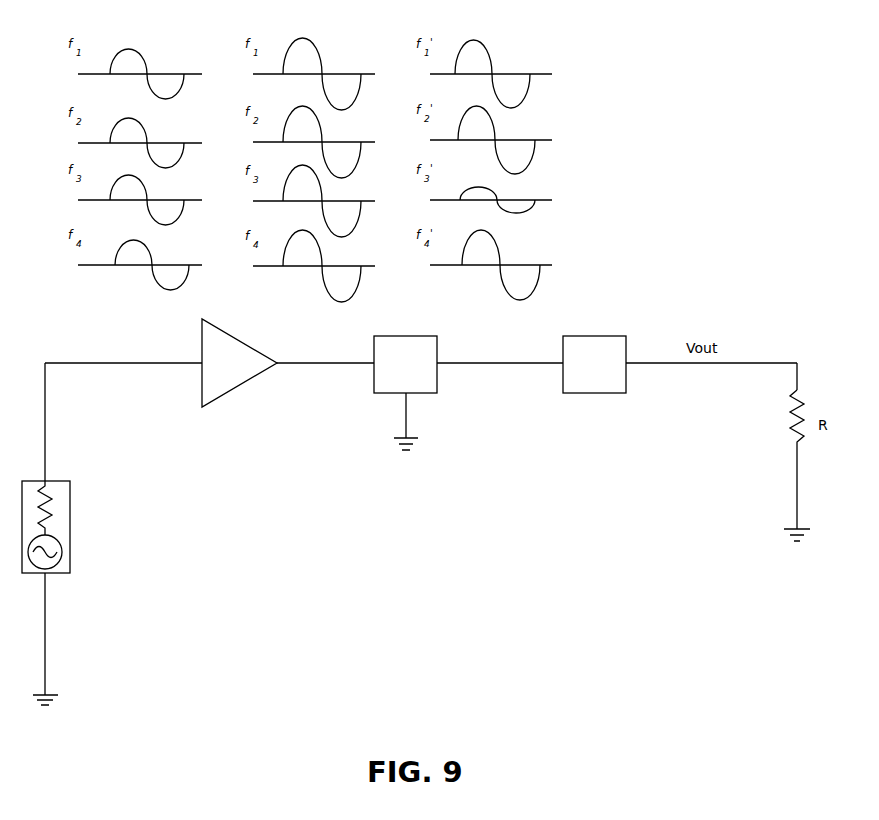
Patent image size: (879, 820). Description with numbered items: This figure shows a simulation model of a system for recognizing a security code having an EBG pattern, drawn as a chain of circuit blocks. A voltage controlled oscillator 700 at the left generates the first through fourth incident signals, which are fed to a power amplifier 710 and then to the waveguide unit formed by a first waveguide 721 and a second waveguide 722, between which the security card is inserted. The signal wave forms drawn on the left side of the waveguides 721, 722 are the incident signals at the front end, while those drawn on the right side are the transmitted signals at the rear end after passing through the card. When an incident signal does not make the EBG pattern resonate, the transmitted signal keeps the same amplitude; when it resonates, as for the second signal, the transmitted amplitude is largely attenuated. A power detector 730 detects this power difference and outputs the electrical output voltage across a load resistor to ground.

The voltage controlled oscillator 700 is at (70, 527).
The power amplifier 710 is at (240, 385).
The first waveguide 721 is at (488, 396).
The second waveguide 722 is at (437, 385).
The power detector 730 is at (626, 385).